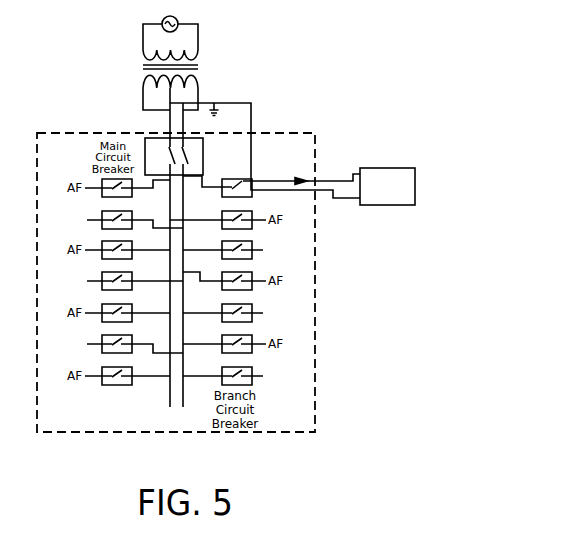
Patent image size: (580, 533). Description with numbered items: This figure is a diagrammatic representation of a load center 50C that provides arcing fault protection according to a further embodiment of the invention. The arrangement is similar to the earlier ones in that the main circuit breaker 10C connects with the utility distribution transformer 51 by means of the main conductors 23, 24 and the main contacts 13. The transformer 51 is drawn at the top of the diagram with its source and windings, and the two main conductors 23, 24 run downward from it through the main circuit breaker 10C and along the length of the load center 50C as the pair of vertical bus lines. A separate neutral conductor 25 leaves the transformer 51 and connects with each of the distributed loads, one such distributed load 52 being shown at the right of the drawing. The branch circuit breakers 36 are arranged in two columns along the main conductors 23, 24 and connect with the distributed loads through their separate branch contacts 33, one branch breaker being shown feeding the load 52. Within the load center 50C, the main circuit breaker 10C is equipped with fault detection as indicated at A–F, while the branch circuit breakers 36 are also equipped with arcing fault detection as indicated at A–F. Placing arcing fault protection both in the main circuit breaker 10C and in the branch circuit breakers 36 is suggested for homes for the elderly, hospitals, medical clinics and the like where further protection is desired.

The load center 50C is at (392, 393).
The distribution transformer 51 is at (214, 61).
The neutral conductor 25 is at (252, 161).
The main conductor 23 is at (170, 203).
The main conductor 24 is at (183, 197).
The main contacts 13 is at (158, 147).
The main circuit breaker 10C is at (164, 127).
The branch contacts 33 is at (242, 192).
The branch circuit breakers 36 is at (252, 384).
The distributed load 52 is at (383, 205).